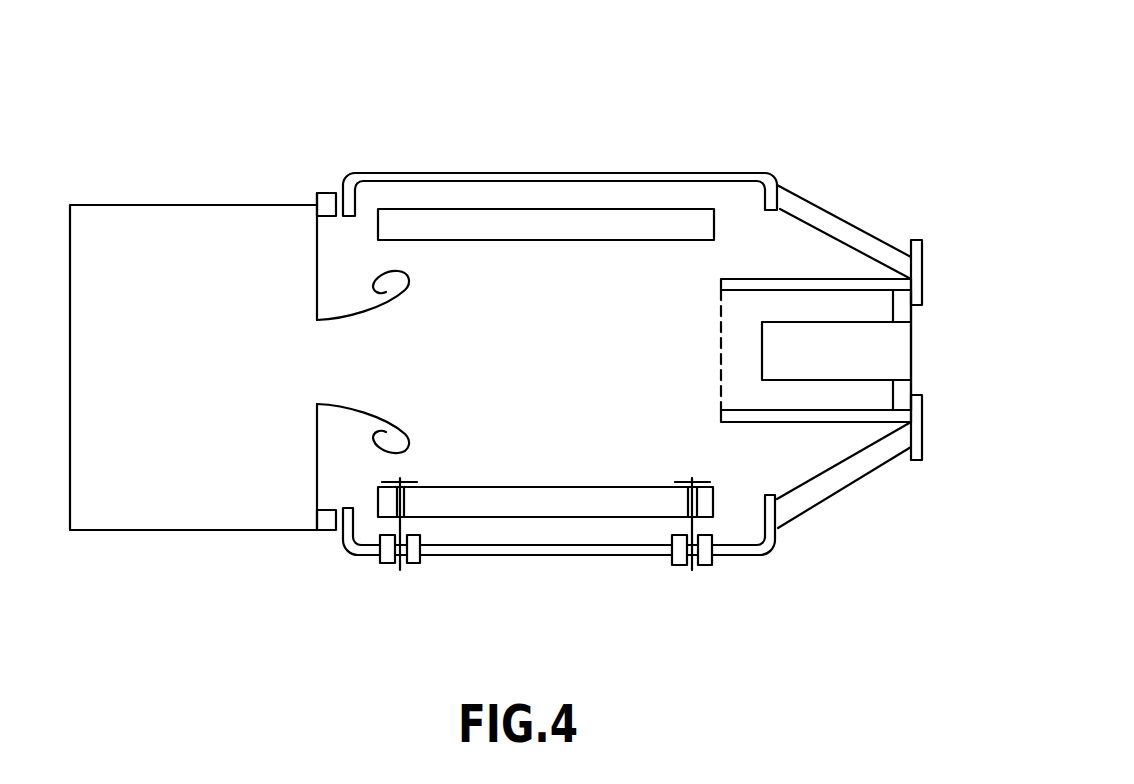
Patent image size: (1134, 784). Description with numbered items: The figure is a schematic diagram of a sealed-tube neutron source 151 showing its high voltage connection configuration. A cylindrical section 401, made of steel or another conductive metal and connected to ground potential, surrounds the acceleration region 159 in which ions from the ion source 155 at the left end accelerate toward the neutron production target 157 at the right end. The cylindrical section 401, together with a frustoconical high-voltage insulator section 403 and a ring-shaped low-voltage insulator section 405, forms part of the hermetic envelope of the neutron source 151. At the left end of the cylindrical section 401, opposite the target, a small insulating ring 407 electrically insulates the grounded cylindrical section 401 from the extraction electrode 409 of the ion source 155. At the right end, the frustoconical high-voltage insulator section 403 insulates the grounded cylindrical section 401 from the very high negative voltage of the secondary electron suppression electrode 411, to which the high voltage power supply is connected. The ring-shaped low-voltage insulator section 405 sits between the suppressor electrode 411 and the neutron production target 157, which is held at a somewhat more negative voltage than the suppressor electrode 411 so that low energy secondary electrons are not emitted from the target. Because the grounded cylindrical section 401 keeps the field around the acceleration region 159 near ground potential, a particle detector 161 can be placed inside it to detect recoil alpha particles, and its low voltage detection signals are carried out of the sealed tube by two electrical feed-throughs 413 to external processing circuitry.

The neutron source 151 is at (857, 103).
The ion source 155 is at (183, 546).
The neutron production target 157 is at (841, 392).
The acceleration region 159 is at (551, 567).
The particle detector 161 is at (544, 194).
The cylindrical section 401 is at (440, 155).
The frustoconical high-voltage insulator section 403 is at (806, 174).
The ring-shaped low-voltage insulator section 405 is at (932, 286).
The insulating ring 407 is at (317, 546).
The extraction electrode 409 is at (351, 304).
The secondary electron suppression electrode 411 is at (734, 265).
The electrical feed-throughs 413 is at (405, 578).